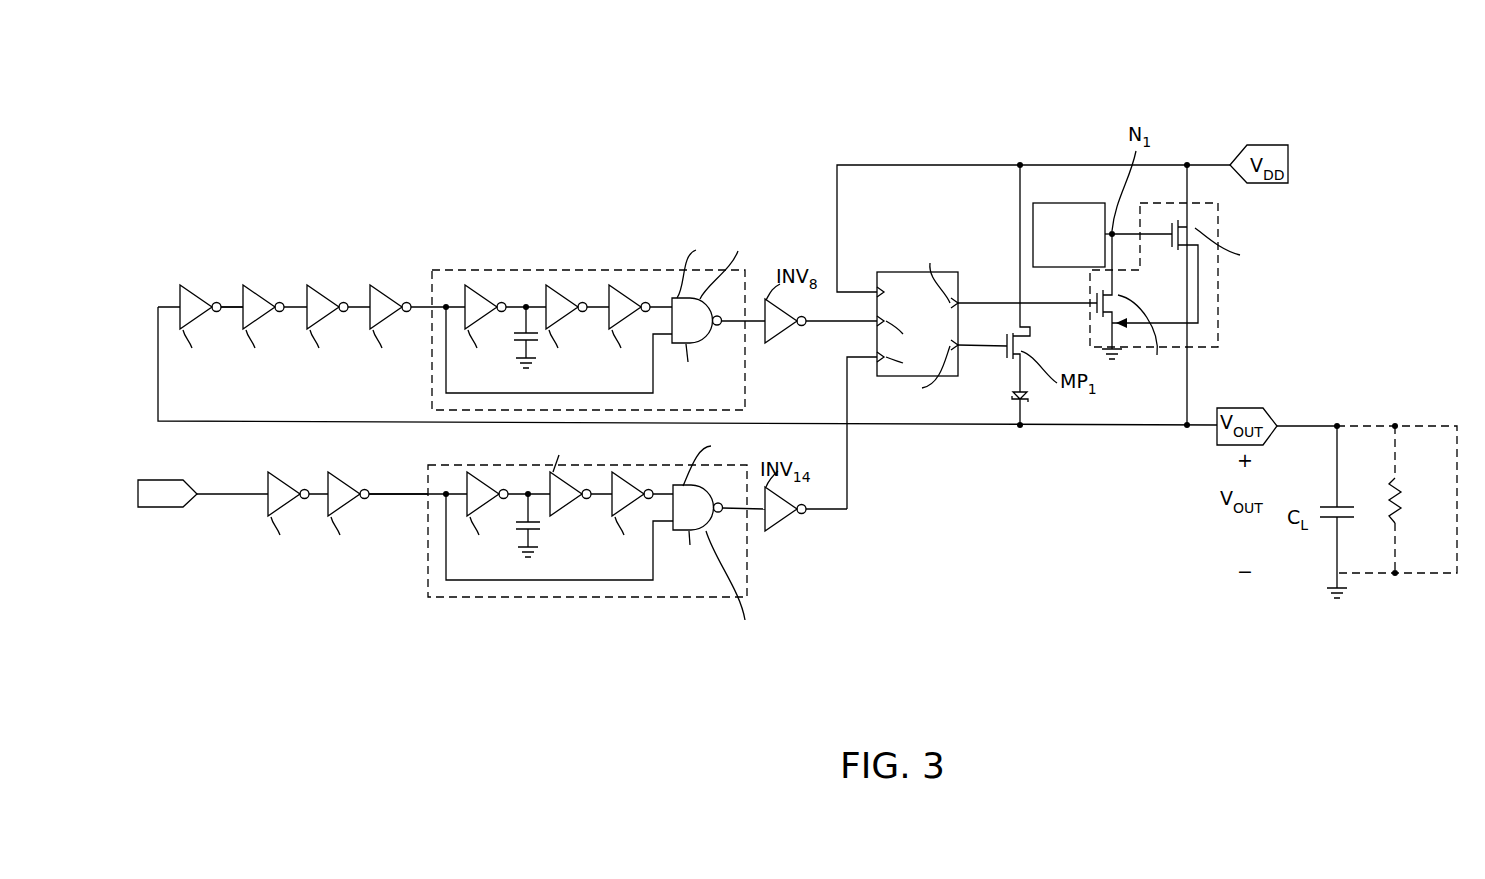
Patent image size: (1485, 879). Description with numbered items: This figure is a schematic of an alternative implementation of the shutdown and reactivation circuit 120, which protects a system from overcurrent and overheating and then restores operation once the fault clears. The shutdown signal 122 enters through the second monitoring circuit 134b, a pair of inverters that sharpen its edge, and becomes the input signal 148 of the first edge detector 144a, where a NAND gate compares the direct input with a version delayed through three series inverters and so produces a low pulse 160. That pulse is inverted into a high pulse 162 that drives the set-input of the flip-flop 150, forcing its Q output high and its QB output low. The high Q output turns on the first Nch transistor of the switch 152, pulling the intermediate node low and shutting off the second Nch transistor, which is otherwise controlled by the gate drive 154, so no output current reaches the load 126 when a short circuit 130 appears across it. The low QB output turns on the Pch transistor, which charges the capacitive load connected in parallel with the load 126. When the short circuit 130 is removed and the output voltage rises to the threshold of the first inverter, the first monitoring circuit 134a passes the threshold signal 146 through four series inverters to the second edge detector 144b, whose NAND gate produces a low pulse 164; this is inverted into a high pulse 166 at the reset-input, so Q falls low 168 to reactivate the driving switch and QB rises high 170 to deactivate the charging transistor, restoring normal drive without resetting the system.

The shutdown and reactivation circuit 120 is at (913, 142).
The shutdown signal 122 is at (156, 508).
The load 126 is at (1400, 497).
The short circuit 130 is at (1455, 562).
The first monitoring circuit 134a is at (316, 261).
The second monitoring circuit 134b is at (342, 585).
The first edge detector 144a is at (497, 600).
The second edge detector 144b is at (497, 268).
The threshold signal 146 is at (216, 301).
The input signal 148 is at (384, 497).
The flip-flop 150 is at (907, 268).
The switch 152 is at (1219, 290).
The gate drive 154 is at (1050, 202).
The low pulse 160 is at (752, 512).
The high pulse 162 is at (820, 511).
The low pulse 164 is at (752, 318).
The high pulse 166 is at (822, 326).
The transition of first output Q from high to low 168 is at (975, 302).
The transition of second output QB from low to high 170 is at (990, 348).